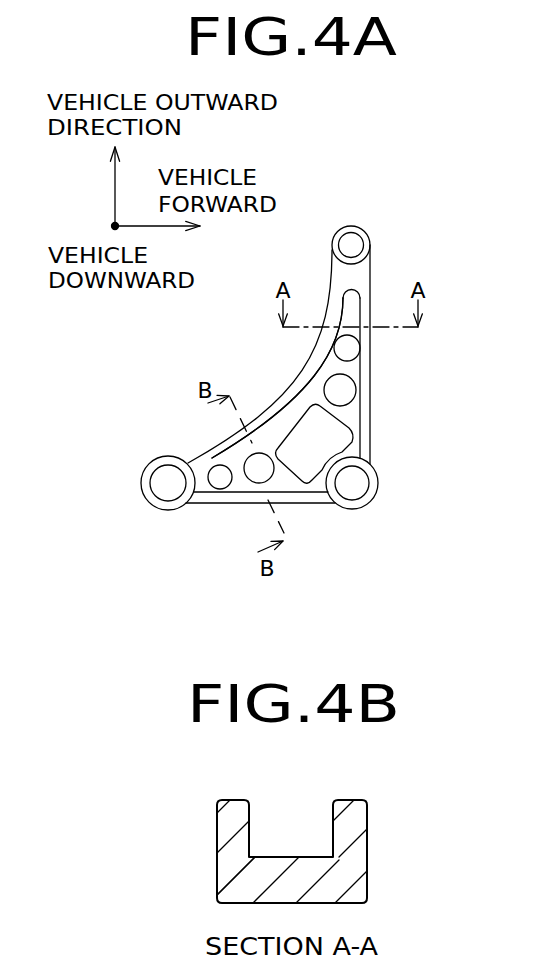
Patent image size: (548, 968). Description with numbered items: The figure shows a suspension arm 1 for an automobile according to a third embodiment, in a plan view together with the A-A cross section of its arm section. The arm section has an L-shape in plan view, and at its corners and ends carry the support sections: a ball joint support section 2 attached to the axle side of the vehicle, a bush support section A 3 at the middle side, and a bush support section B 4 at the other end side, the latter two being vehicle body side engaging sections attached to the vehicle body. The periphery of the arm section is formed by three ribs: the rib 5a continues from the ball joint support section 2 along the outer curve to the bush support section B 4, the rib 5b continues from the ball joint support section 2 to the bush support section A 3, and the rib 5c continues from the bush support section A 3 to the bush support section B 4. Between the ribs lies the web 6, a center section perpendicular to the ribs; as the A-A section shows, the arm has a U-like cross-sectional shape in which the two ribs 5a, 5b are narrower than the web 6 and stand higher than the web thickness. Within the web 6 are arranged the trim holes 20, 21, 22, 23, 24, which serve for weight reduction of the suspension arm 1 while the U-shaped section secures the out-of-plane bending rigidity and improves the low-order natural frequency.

In FIG. 4A, the suspension arm 1 is at (379, 278).
In FIG. 4A, the ball joint support section 2 is at (351, 226).
In FIG. 4A, the bush support section A 3 is at (378, 484).
In FIG. 4A, the bush support section B 4 is at (142, 485).
In FIG. 4A, the rib 5a is at (322, 357).
In FIG. 4B, the rib 5a is at (225, 812).
In FIG. 4A, the rib 5b is at (365, 376).
In FIG. 4B, the rib 5b is at (360, 812).
In FIG. 4A, the rib 5c is at (310, 497).
In FIG. 4A, the web 6 is at (268, 442).
In FIG. 4B, the web 6 is at (295, 868).
In FIG. 4A, the trim hole 20 is at (258, 480).
In FIG. 4A, the trim hole 21 is at (331, 433).
In FIG. 4A, the trim hole 22 is at (342, 391).
In FIG. 4A, the trim hole 23 is at (220, 474).
In FIG. 4A, the trim hole 24 is at (351, 349).